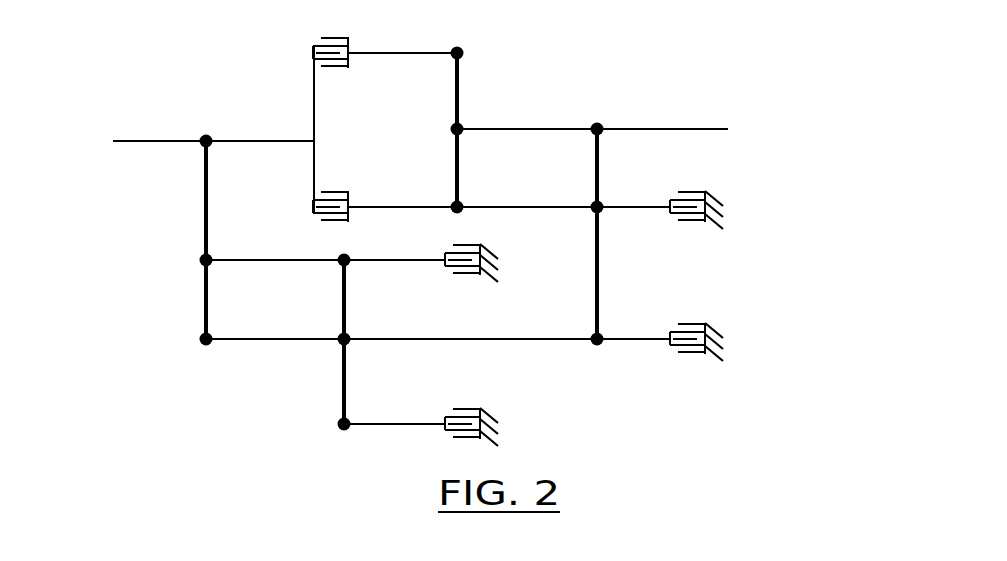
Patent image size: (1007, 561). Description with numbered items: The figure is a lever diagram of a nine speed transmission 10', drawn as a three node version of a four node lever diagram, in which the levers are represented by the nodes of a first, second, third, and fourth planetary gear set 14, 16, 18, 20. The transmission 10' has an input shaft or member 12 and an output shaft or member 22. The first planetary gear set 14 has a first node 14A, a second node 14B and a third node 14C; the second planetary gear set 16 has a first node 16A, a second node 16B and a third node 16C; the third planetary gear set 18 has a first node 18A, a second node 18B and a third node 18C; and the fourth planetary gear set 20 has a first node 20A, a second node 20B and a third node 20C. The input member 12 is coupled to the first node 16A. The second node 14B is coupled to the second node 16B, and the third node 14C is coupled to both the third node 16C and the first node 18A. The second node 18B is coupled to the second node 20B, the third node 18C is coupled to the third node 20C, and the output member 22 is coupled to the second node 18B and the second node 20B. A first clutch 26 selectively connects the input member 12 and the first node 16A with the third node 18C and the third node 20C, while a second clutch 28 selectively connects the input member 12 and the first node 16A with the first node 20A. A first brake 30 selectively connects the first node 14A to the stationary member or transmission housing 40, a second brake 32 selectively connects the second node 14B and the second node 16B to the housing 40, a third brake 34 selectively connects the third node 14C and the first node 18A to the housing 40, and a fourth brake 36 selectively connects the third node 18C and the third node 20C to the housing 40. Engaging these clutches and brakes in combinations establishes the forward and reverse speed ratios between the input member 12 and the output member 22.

The transmission 10' is at (499, 265).
The input shaft or member 12 is at (170, 140).
The first planetary gear set 14 is at (330, 434).
The first node of the first planetary gear set 14A is at (349, 431).
The second node of the first planetary gear set 14B is at (351, 256).
The third node of the first planetary gear set 14C is at (351, 336).
The second planetary gear set 16 is at (196, 351).
The first node of the second planetary gear set 16A is at (203, 147).
The second node of the second planetary gear set 16B is at (202, 262).
The third node of the second planetary gear set 16C is at (208, 347).
The third planetary gear set 18 is at (616, 103).
The first node of the third planetary gear set 18A is at (600, 346).
The second node of the third planetary gear set 18B is at (597, 124).
The third node of the third planetary gear set 18C is at (603, 213).
The fourth planetary gear set 20 is at (491, 77).
The first node of the fourth planetary gear set 20A is at (450, 58).
The second node of the fourth planetary gear set 20B is at (450, 131).
The third node of the fourth planetary gear set 20C is at (450, 202).
The output shaft or member 22 is at (652, 133).
The first clutch 26 is at (334, 193).
The second clutch 28 is at (333, 70).
The first brake 30 is at (462, 410).
The second brake 32 is at (462, 275).
The third brake 34 is at (683, 354).
The fourth brake 36 is at (683, 222).
The stationary member or transmission housing 40 is at (493, 250).